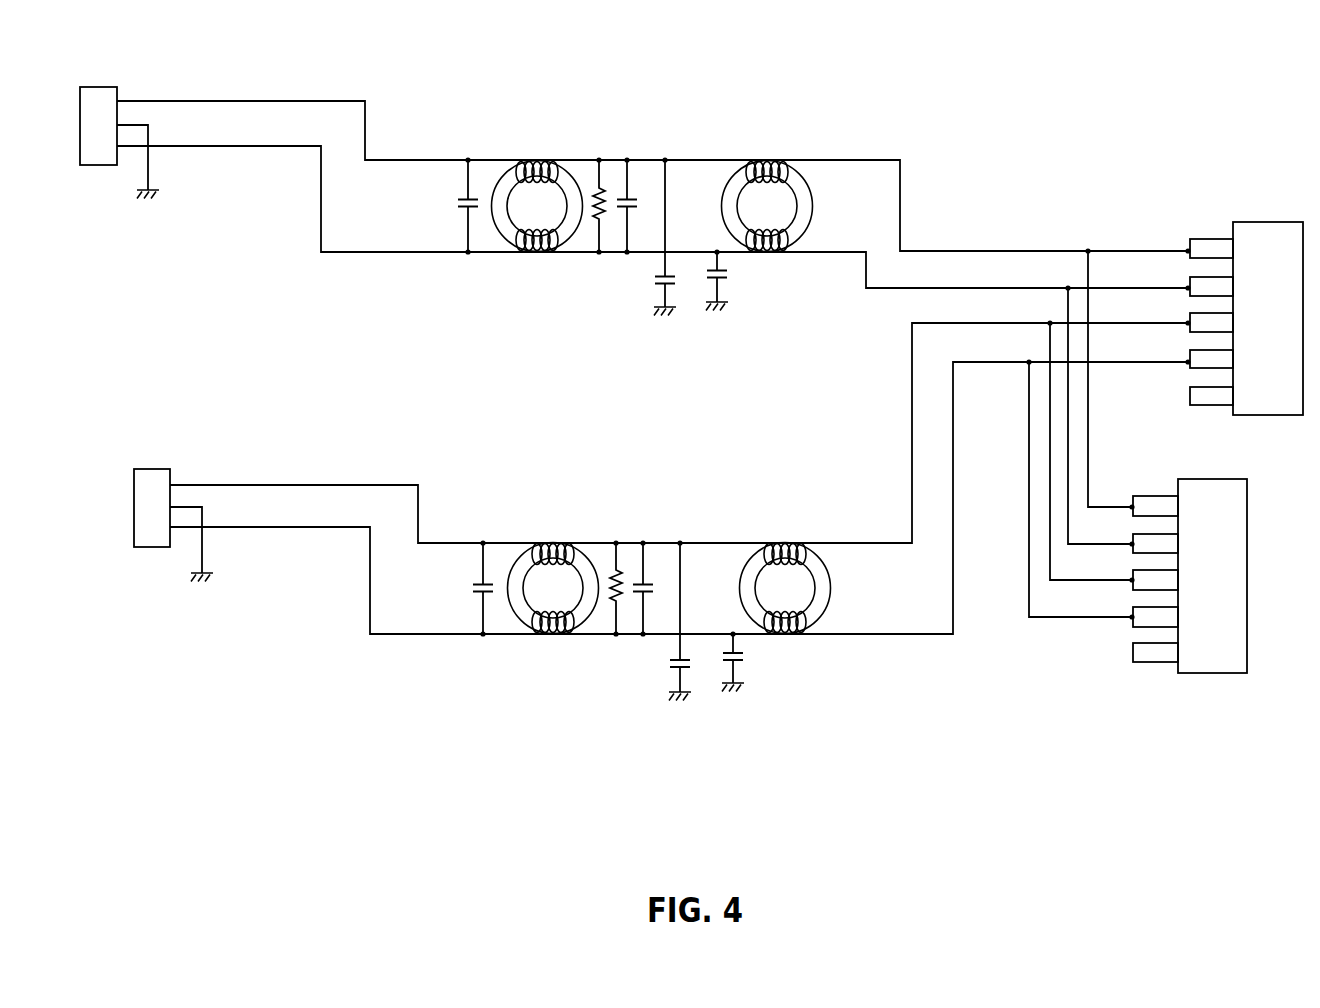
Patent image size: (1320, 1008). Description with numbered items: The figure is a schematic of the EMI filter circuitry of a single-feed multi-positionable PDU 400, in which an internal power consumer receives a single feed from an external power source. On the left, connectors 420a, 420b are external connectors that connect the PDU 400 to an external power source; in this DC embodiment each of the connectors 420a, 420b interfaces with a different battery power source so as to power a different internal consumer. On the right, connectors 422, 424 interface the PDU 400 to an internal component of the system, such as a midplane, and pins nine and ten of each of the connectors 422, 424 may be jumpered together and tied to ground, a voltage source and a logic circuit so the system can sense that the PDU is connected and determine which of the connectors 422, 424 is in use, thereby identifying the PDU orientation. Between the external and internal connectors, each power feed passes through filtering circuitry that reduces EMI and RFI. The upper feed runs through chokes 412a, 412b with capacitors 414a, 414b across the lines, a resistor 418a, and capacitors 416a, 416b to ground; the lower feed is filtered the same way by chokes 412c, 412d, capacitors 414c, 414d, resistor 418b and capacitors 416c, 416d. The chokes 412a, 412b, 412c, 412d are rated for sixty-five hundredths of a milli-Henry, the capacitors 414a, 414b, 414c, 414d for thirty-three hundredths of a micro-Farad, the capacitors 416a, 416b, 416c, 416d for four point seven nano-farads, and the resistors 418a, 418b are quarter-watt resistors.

The PDU 400 is at (691, 425).
The connector 420a is at (99, 87).
The connector 420b is at (150, 469).
The connector 422 is at (1257, 222).
The connector 424 is at (1230, 673).
The choke 412a is at (537, 206).
The choke 412b is at (767, 206).
The choke 412c is at (553, 588).
The choke 412d is at (785, 588).
The capacitor 414a is at (445, 205).
The capacitor 414b is at (629, 185).
The capacitor 414c is at (460, 588).
The capacitor 414d is at (645, 566).
The capacitor 416a is at (637, 286).
The capacitor 416b is at (743, 284).
The capacitor 416c is at (654, 670).
The capacitor 416d is at (760, 667).
The resistor 418a is at (597, 186).
The resistor 418b is at (614, 566).